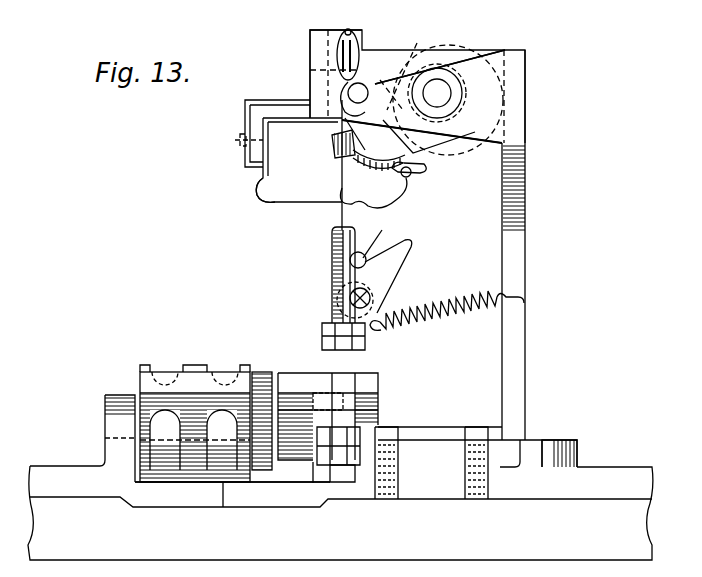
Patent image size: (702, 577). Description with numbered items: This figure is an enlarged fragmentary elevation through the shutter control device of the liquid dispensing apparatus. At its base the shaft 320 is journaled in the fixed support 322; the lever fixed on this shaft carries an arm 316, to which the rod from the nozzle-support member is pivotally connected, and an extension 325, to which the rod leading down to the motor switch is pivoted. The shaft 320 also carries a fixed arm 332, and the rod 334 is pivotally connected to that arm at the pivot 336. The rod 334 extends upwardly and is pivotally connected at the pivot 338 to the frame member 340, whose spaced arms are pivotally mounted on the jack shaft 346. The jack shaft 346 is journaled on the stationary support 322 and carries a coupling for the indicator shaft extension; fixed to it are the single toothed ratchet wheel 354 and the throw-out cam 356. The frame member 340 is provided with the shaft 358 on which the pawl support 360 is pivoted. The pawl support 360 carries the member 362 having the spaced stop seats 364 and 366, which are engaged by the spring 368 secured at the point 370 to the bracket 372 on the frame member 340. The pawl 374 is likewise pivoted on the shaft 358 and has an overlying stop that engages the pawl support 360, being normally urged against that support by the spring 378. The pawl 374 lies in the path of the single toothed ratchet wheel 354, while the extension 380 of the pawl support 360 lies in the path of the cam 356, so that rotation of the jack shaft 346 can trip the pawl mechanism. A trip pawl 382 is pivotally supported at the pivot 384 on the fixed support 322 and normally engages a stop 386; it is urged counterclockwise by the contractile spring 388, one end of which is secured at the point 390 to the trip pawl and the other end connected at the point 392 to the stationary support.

The arm 316 is at (190, 370).
The shaft 320 is at (110, 412).
The fixed support 322 is at (545, 440).
The extension 325 is at (197, 455).
The arm 332 is at (378, 405).
The rod 334 is at (335, 252).
The pivotal connection 336 is at (337, 370).
The pivotal connection 338 is at (348, 30).
The frame member 340 is at (318, 38).
The jack shaft 346 is at (437, 93).
The single toothed ratchet wheel 354 is at (450, 52).
The throw-out cam 356 is at (527, 100).
The shaft 358 is at (365, 85).
The pawl support 360 is at (345, 160).
The member 362 is at (426, 162).
The stop seat 364 is at (405, 197).
The stop seat 366 is at (412, 172).
The spring 368 is at (268, 203).
The securing point 370 is at (240, 140).
The bracket 372 is at (263, 100).
The pawl 374 is at (355, 145).
The spring 378 is at (355, 120).
The extension 380 is at (417, 45).
The trip pawl 382 is at (405, 258).
The pivotal support 384 is at (388, 298).
The stop 386 is at (388, 232).
The contractile spring 388 is at (438, 320).
The securing point 390 is at (385, 330).
The connection point 392 is at (518, 300).